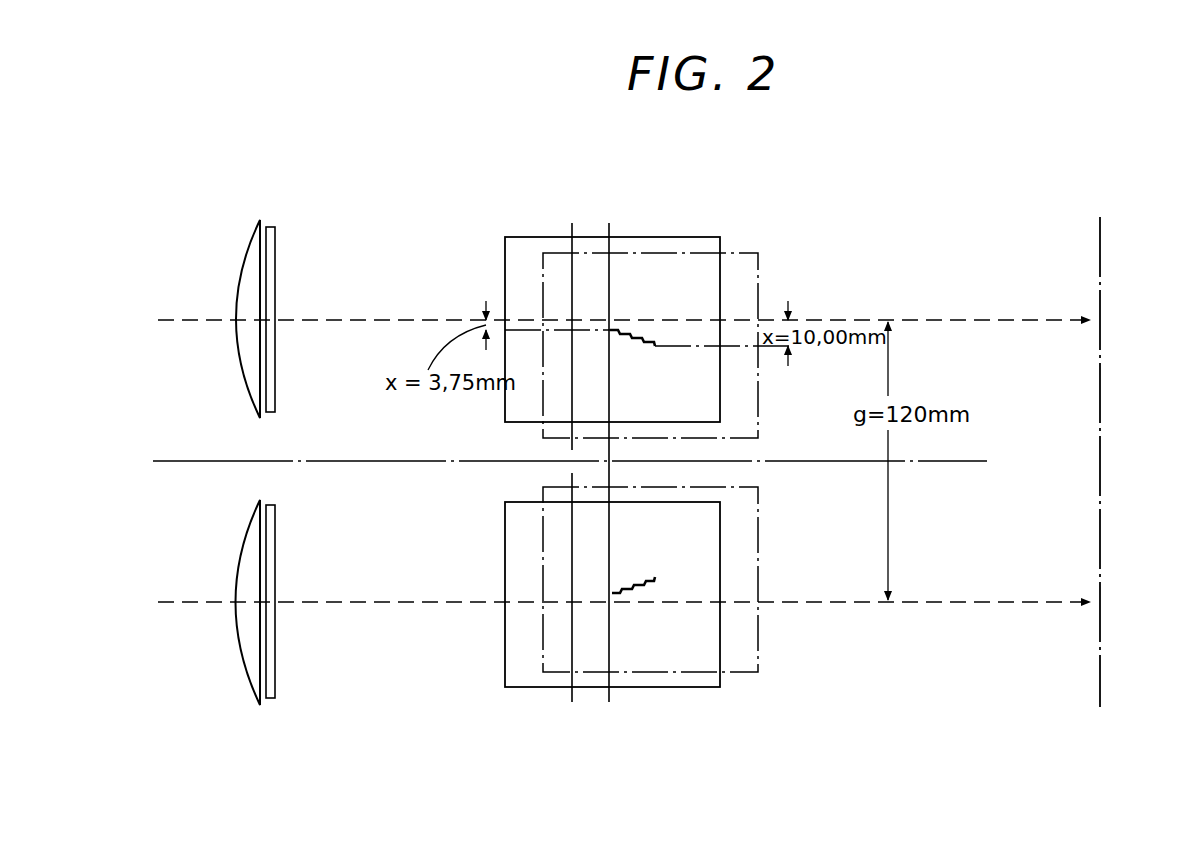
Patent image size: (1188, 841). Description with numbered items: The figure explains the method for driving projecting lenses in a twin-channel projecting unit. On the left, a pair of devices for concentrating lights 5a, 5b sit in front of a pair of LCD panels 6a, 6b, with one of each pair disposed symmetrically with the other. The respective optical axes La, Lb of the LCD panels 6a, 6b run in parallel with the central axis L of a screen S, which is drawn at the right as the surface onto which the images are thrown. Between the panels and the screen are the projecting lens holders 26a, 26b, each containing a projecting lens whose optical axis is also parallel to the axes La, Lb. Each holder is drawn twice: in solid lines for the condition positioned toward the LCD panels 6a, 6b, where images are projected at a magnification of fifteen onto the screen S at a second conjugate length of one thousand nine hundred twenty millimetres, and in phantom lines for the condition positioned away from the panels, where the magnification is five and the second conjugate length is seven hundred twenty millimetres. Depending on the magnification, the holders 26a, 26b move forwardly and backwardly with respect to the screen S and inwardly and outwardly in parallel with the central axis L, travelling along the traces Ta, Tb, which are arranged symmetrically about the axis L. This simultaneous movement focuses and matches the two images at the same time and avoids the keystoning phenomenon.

The device for concentrating lights 5a is at (252, 253).
The LCD panel 6a is at (274, 245).
The device for concentrating lights 5b is at (252, 688).
The LCD panel 6b is at (274, 690).
The projecting lens holder 26a is at (505, 237).
The projecting lens holder 26b is at (506, 687).
The trace Ta is at (637, 330).
The trace Tb is at (632, 591).
The optical axis La is at (648, 326).
The optical axis Lb is at (648, 607).
The central axis L is at (581, 464).
The screen S is at (1102, 677).